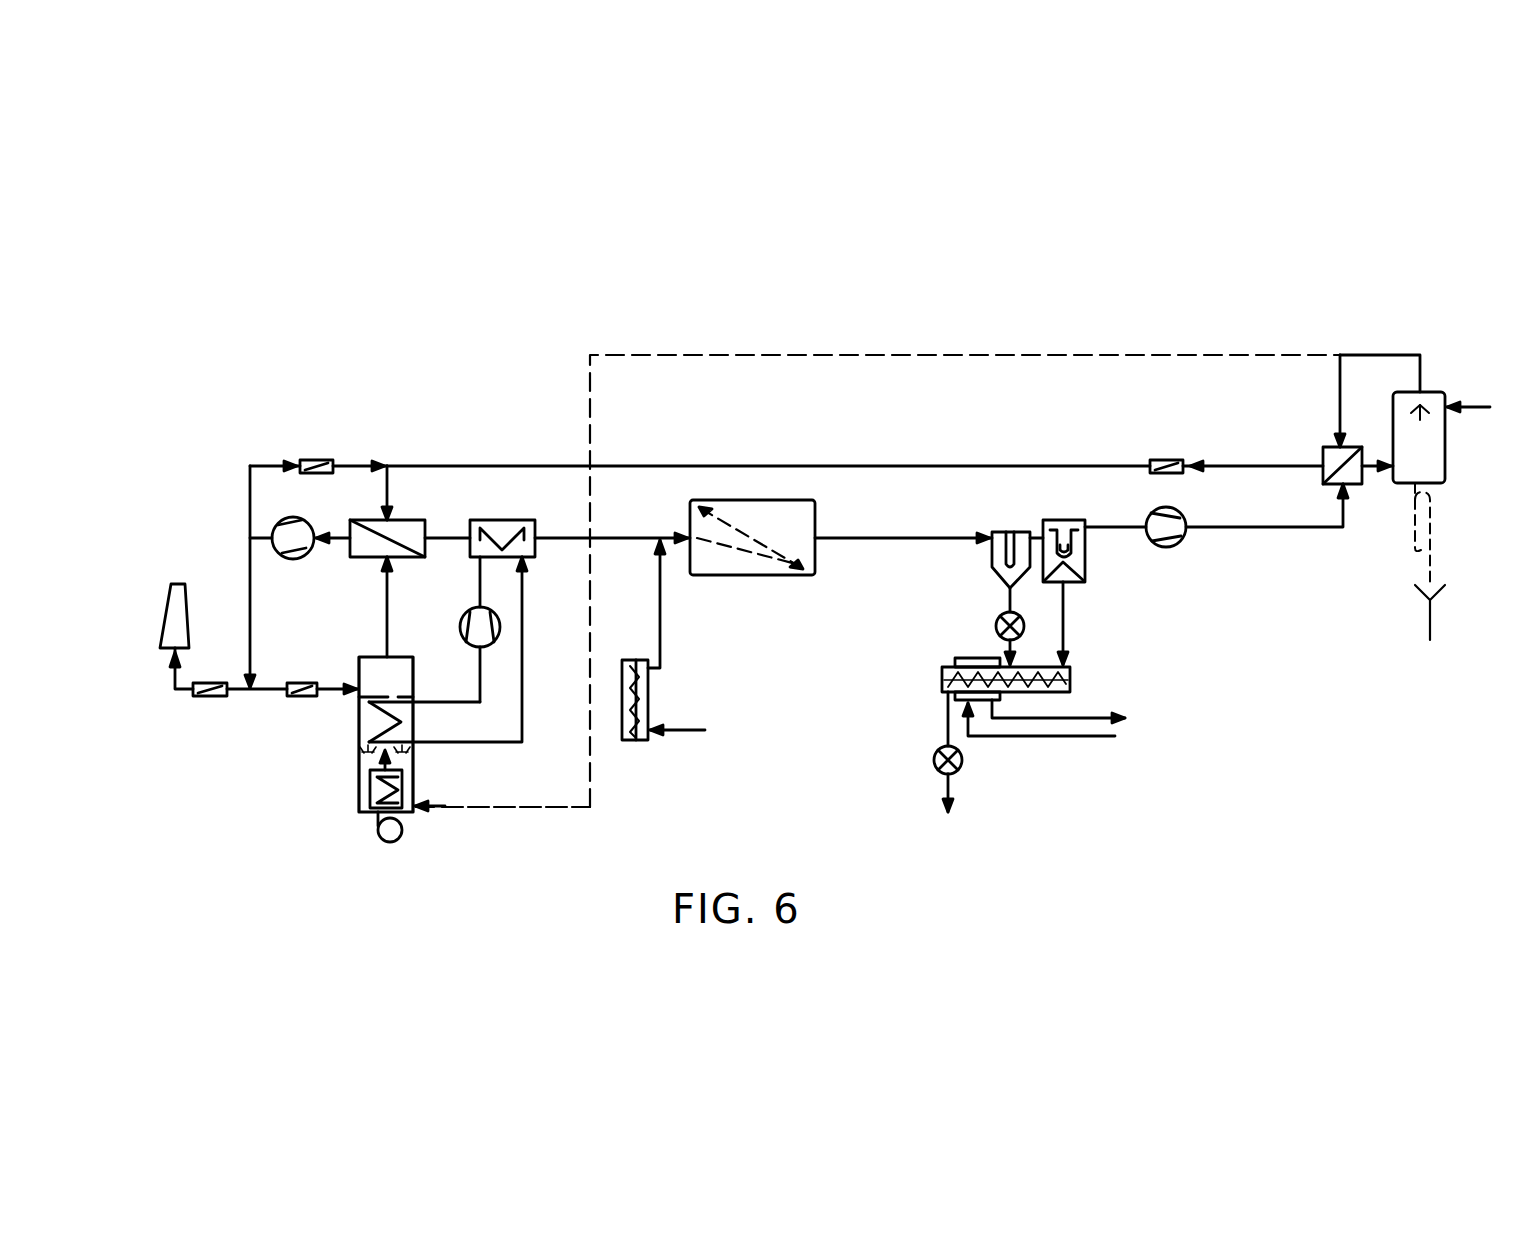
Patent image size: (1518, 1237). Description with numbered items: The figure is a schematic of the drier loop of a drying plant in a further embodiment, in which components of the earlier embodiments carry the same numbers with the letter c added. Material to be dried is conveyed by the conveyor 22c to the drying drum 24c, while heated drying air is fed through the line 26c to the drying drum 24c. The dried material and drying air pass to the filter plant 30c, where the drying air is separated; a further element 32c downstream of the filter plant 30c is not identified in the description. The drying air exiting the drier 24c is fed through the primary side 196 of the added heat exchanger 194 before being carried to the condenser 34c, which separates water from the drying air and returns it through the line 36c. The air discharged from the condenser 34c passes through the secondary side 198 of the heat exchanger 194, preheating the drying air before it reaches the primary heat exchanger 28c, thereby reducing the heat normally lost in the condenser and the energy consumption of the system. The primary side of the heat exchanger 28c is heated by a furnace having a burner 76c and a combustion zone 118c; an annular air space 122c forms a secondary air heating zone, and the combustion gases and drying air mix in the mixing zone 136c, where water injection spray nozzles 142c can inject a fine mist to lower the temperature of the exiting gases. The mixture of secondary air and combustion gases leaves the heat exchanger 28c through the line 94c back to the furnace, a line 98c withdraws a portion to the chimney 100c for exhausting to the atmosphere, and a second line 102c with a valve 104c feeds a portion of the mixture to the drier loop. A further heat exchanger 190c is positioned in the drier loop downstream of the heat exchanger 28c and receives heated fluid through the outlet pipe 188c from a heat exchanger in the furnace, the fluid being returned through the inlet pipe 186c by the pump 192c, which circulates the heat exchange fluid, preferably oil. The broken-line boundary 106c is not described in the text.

The conveyor 22c is at (650, 690).
The drying drum 24c is at (762, 577).
The line 26c is at (633, 536).
The heat exchanger 28c is at (405, 518).
The filter plant 30c is at (1017, 768).
The recirculation fan 32c is at (1170, 547).
The condenser 34c is at (1446, 462).
The line 36c is at (927, 466).
The burner 76c is at (388, 842).
The line 94c is at (253, 598).
The line 98c is at (175, 688).
The chimney 100c is at (181, 583).
The second line 102c is at (268, 462).
The valve 104c is at (326, 460).
The drying system boundary 106c is at (957, 355).
The combustion zone 118c is at (432, 804).
The annular air space 122c is at (362, 790).
The mixing zone 136c is at (368, 724).
The water injection spray nozzles 142c is at (412, 748).
The inlet pipe 186c is at (453, 700).
The outlet pipe 188c is at (527, 727).
The heat exchanger 190c is at (500, 519).
The pump 192c is at (458, 630).
The heat exchanger 194 is at (1322, 455).
The primary side 196 is at (1358, 484).
The secondary side 198 is at (1336, 447).